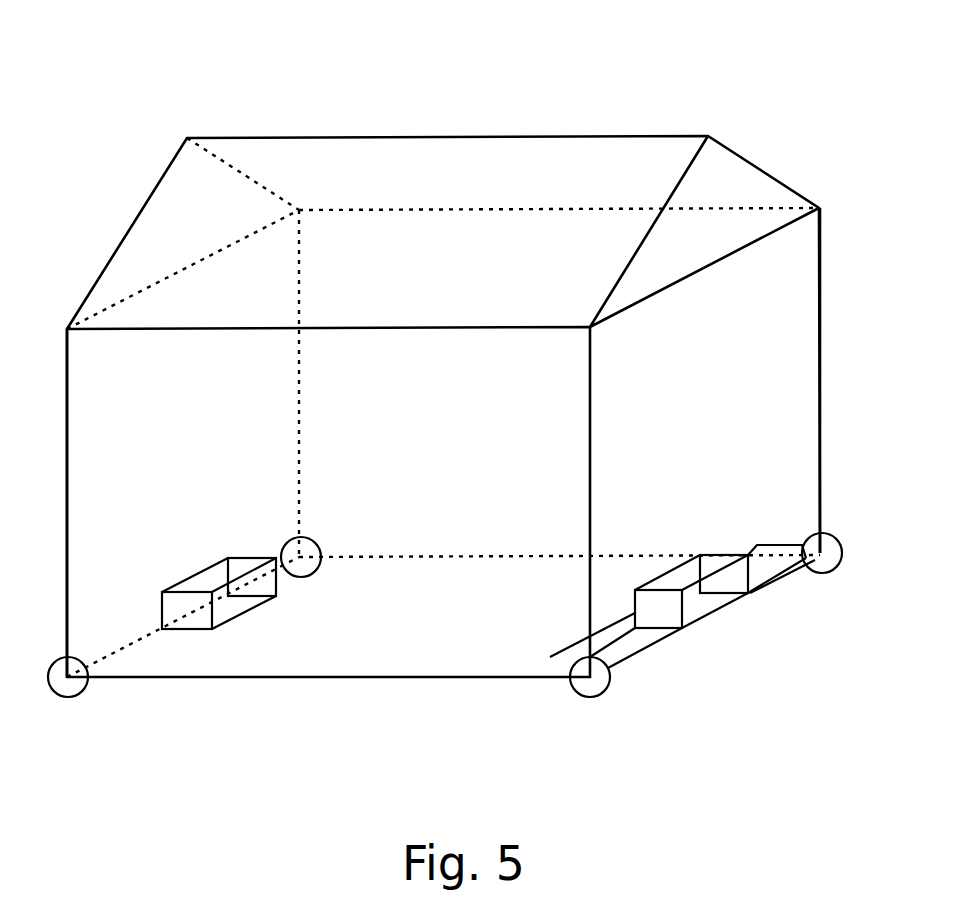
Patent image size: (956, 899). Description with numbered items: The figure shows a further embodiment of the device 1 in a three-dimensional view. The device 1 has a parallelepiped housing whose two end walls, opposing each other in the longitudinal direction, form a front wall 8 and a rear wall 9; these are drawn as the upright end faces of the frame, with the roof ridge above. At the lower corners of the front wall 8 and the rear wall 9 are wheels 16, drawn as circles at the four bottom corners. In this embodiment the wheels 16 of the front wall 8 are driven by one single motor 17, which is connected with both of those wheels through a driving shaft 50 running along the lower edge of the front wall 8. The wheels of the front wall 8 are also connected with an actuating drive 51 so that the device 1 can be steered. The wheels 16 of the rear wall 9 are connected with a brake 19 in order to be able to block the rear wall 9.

The device 1 is at (733, 90).
The front wall 8 is at (803, 395).
The rear wall 9 is at (65, 505).
The wheels 16 is at (68, 697).
The motor 17 is at (722, 583).
The brake 19 is at (202, 570).
The driving shaft 50 is at (682, 614).
The actuating drive 51 is at (627, 637).